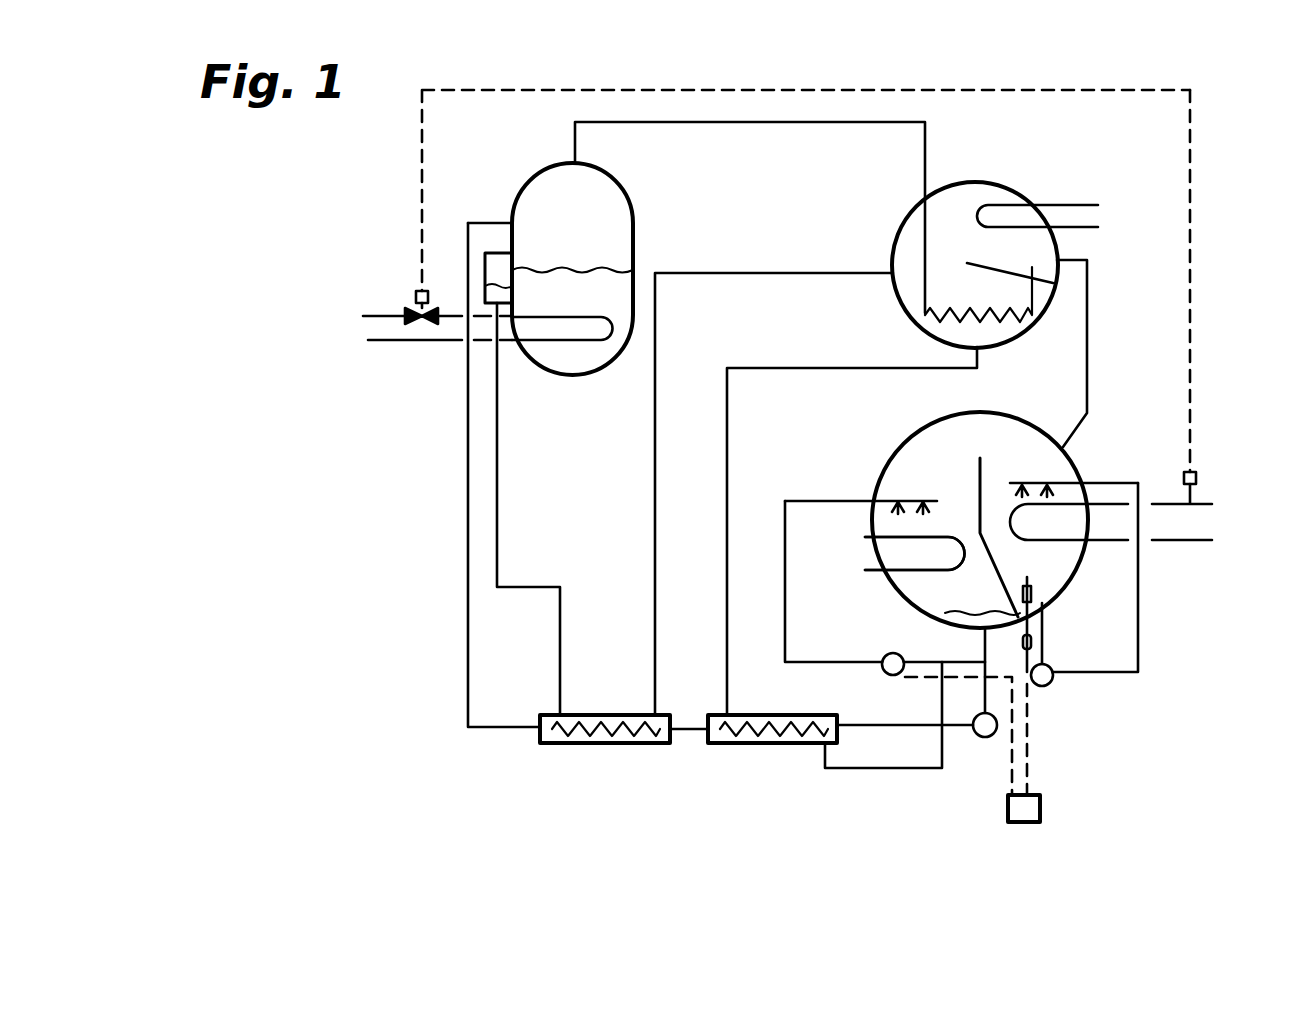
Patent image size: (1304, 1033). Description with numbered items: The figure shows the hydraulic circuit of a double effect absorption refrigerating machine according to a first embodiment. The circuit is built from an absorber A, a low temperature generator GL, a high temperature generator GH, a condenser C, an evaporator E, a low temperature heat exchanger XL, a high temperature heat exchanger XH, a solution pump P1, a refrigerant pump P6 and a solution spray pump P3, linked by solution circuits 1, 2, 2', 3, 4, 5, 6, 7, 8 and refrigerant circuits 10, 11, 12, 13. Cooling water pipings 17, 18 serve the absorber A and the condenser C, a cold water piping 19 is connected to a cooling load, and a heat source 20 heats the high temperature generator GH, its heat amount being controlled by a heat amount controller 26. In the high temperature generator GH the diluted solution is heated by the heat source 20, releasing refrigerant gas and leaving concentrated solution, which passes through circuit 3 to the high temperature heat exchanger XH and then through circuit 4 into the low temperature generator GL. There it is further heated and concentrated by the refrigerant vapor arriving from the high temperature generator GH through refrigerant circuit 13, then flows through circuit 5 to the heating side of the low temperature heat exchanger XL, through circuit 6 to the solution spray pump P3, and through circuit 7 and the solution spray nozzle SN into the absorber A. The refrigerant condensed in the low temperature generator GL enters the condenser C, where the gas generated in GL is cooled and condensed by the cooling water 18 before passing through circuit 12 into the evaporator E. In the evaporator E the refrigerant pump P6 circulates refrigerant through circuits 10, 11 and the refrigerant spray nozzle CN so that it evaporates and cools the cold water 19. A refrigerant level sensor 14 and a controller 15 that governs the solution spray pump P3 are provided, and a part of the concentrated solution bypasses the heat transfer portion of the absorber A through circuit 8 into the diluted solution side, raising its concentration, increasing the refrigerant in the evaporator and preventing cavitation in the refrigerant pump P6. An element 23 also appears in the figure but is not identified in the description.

The high temperature generator GH is at (633, 211).
The low temperature generator GL is at (893, 303).
The condenser C is at (1052, 250).
The evaporator E is at (1078, 462).
The absorber A is at (890, 579).
The solution spray nozzle SN is at (912, 500).
The refrigerant spray nozzle CN is at (1056, 483).
The high temperature heat exchanger XH is at (605, 745).
The low temperature heat exchanger XL is at (758, 745).
The solution pump P1 is at (978, 738).
The solution spray pump P3 is at (886, 676).
The refrigerant pump P6 is at (1052, 687).
The solution circuit 1 is at (983, 690).
The solution circuit 2 is at (905, 704).
The solution circuit 2' is at (504, 475).
The solution circuit 3 is at (500, 418).
The solution circuit 4 is at (655, 508).
The solution circuit 5 is at (765, 369).
The solution circuit 6 is at (878, 770).
The solution circuit 7 is at (786, 603).
The solution circuit 8 is at (953, 661).
The refrigerant circuit 10 is at (1045, 657).
The refrigerant circuit 11 is at (1138, 608).
The refrigerant circuit 12 is at (1087, 338).
The refrigerant circuit 13 is at (780, 124).
The refrigerant level sensor 14 is at (1047, 628).
The controller 15 is at (1042, 810).
The cooling water piping 17 is at (866, 538).
The cooling water piping 18 is at (1065, 204).
The cold water piping 19 is at (1107, 546).
The heat source 20 is at (415, 343).
The chilled water flow control valve 23 is at (1193, 518).
The heat amount controller 26 is at (418, 292).